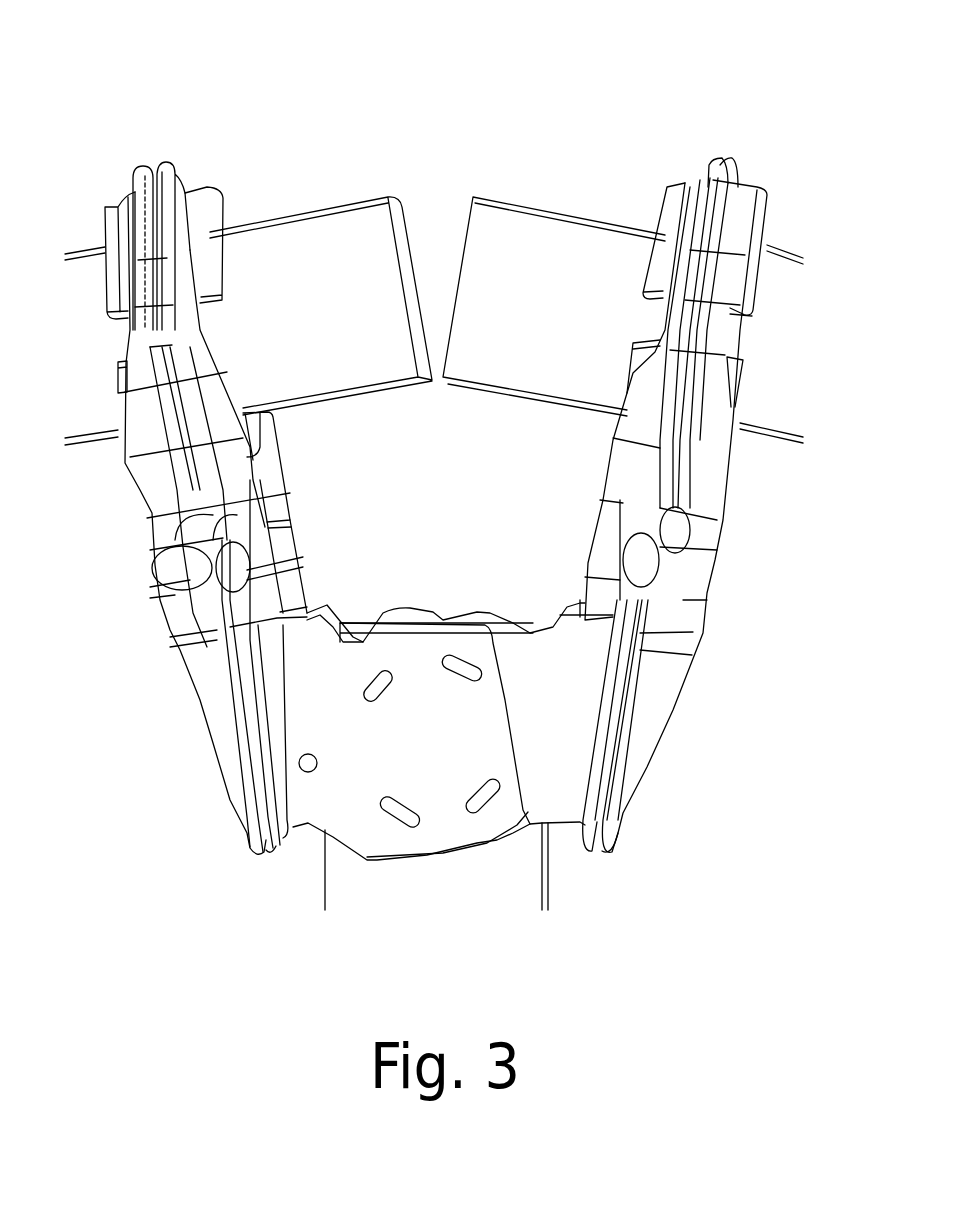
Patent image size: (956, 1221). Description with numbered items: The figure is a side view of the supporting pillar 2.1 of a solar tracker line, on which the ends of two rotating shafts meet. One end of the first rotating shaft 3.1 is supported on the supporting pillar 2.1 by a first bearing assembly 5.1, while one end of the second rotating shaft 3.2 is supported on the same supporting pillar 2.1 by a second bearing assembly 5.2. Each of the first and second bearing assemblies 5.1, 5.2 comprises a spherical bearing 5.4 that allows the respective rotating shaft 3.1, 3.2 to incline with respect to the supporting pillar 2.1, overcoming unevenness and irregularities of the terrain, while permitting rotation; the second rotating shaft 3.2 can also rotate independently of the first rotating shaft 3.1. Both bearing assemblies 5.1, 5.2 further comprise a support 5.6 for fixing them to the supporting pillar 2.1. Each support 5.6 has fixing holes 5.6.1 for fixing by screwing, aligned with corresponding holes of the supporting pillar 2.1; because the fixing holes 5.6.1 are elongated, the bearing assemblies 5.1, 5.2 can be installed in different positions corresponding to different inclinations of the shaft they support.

The supporting pillar 2.1 is at (375, 880).
The first rotating shaft 3.1 is at (332, 262).
The second rotating shaft 3.2 is at (543, 255).
The first bearing assembly 5.1 is at (120, 538).
The second bearing assembly 5.2 is at (728, 637).
The spherical bearing 5.4 is at (195, 235).
The support 5.6 is at (567, 726).
The fixing holes 5.6.1 is at (495, 797).